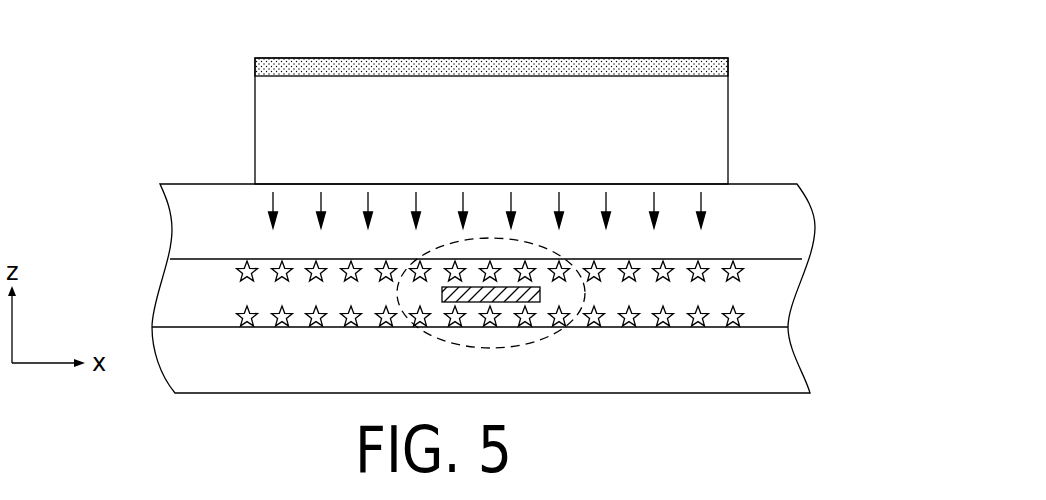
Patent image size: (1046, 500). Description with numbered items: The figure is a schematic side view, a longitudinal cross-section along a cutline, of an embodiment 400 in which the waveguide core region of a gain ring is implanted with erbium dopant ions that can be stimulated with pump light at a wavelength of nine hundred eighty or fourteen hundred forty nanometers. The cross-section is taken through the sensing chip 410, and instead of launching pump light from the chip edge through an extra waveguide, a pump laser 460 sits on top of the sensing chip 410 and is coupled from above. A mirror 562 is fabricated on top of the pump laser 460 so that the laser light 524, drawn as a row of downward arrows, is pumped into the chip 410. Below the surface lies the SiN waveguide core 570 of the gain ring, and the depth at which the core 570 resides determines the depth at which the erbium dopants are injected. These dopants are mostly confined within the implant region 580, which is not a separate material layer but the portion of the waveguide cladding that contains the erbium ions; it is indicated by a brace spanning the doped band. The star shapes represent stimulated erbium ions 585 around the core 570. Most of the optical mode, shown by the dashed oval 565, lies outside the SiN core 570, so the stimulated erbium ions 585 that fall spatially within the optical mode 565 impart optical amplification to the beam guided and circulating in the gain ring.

The embodiment 400 is at (128, 74).
The sensing chip 410 is at (775, 184).
The pump laser 460 is at (715, 118).
The laser light 524 is at (273, 203).
The mirror 562 is at (598, 58).
The optical mode 565 is at (585, 294).
The waveguide core 570 is at (472, 302).
The implant region 580 is at (827, 258).
The stimulated erbium ions 585 is at (488, 330).